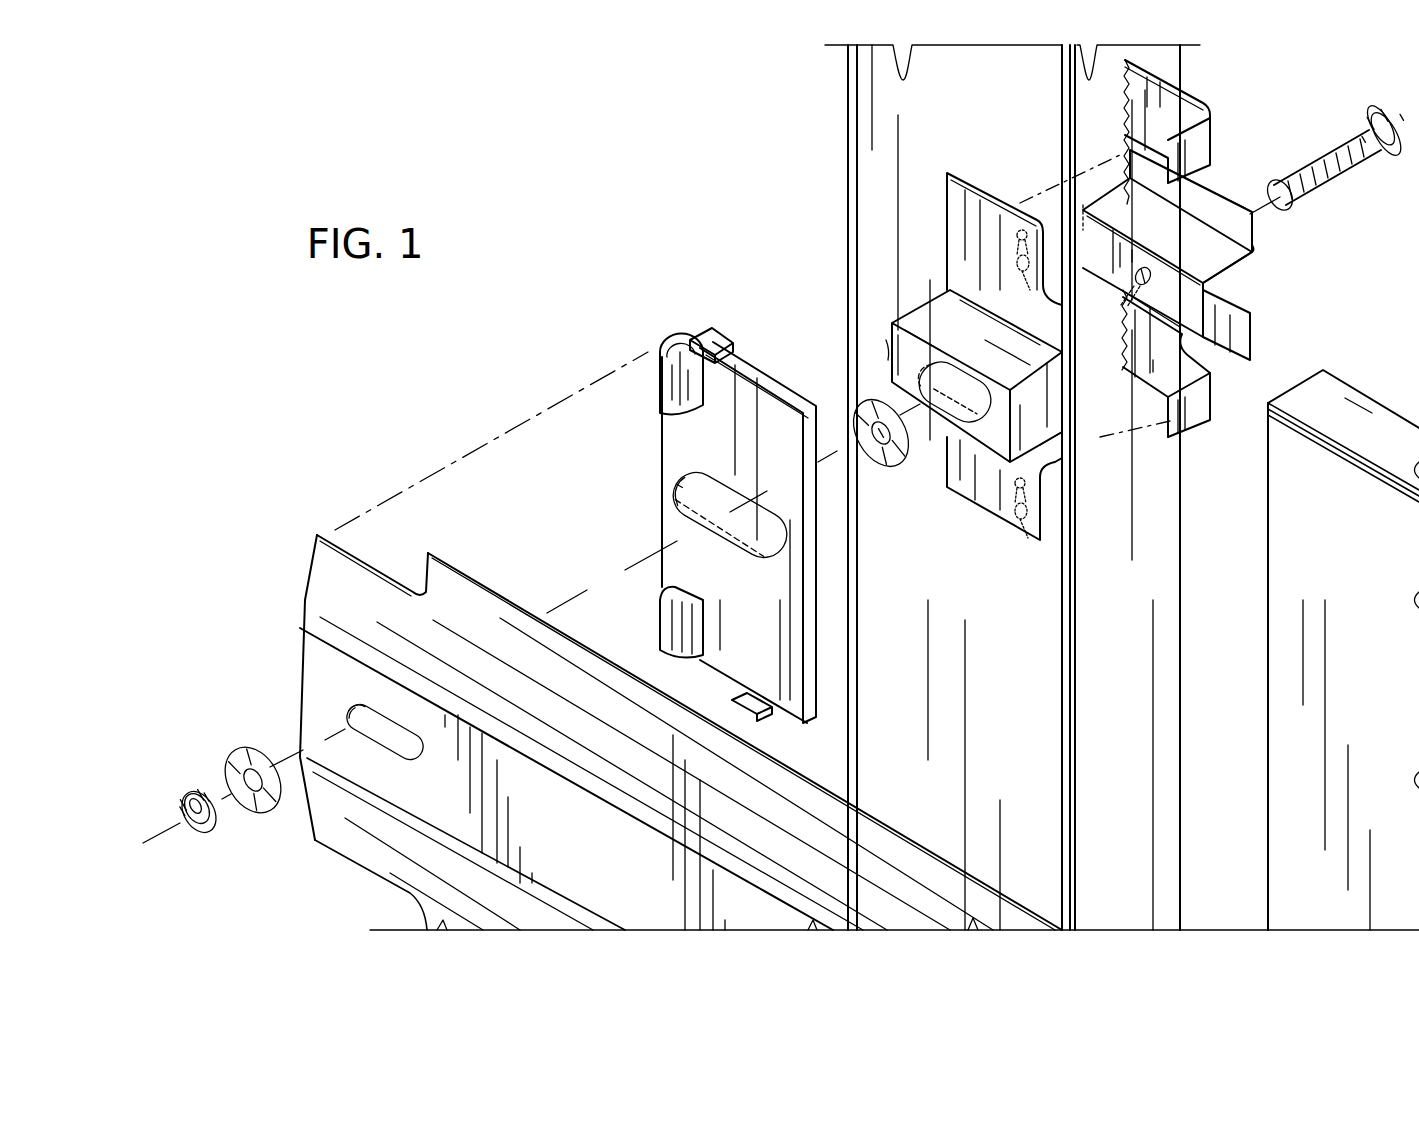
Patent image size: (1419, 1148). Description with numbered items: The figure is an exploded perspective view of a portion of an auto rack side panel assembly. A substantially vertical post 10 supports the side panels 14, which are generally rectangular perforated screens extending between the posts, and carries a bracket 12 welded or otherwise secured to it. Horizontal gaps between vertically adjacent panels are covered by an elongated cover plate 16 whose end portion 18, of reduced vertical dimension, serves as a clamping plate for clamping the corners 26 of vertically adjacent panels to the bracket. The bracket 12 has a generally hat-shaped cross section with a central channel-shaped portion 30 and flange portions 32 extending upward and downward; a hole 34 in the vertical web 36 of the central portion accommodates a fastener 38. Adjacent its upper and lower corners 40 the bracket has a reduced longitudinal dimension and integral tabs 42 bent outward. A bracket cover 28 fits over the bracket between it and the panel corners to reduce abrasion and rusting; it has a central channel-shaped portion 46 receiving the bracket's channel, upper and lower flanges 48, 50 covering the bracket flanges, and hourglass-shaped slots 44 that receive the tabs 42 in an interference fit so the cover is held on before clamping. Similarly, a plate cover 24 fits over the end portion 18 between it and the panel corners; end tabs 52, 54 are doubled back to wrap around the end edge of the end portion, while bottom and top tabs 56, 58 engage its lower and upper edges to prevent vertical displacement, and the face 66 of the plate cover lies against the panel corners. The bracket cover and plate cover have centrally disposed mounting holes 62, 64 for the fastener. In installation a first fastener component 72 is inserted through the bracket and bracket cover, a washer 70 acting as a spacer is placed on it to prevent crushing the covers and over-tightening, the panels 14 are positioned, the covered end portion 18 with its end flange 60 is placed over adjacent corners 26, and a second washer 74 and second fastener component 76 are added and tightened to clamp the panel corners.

The vertical post 10 is at (872, 187).
The bracket 12 is at (1201, 270).
The panel 14 is at (1392, 560).
The cover plate 16 is at (702, 840).
The end portion 18 is at (315, 587).
The plate cover 24 is at (796, 461).
The panel corner 26 is at (1402, 422).
The bracket cover 28 is at (1003, 367).
The central channel-shaped portion 30 is at (1232, 278).
The flange portion 32 is at (1248, 198).
The hole 34 is at (1128, 362).
The vertical web 36 is at (1104, 240).
The fastener 38 is at (1343, 143).
The upper and lower corner 40 is at (1211, 113).
The tab 42 is at (1187, 153).
The slot 44 is at (1040, 290).
The central channel-shaped portion 46 is at (992, 350).
The upper flange 48 is at (1003, 215).
The lower flange 50 is at (1003, 517).
The end tab 52 is at (665, 403).
The end tab 54 is at (670, 632).
The bottom tab 56 is at (767, 722).
The top tab 58 is at (712, 340).
The beam end flange 60 is at (300, 660).
The mounting hole 62 is at (888, 347).
The mounting hole 64 is at (677, 517).
The plate face 66 is at (736, 603).
The washer 70 is at (862, 447).
The first fastener component 72 is at (1350, 173).
The second washer 74 is at (262, 813).
The second fastener component 76 is at (200, 796).